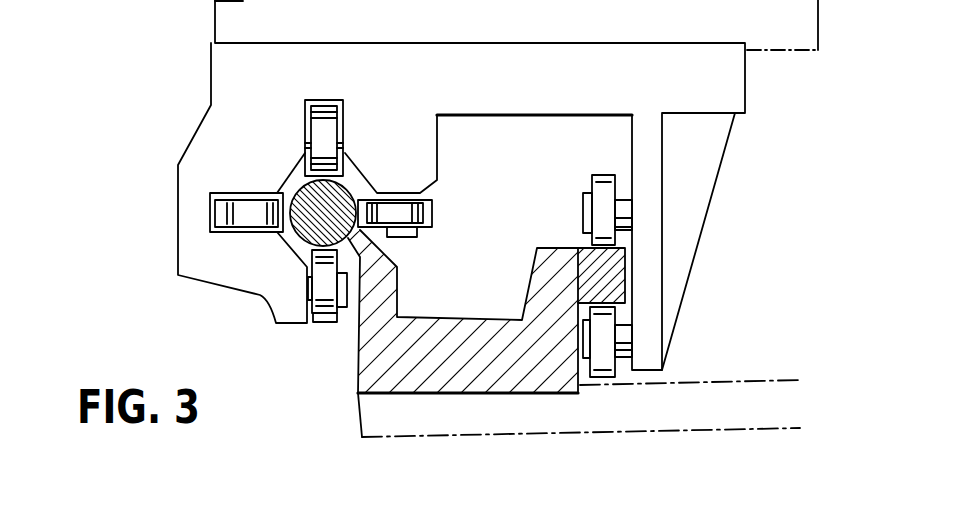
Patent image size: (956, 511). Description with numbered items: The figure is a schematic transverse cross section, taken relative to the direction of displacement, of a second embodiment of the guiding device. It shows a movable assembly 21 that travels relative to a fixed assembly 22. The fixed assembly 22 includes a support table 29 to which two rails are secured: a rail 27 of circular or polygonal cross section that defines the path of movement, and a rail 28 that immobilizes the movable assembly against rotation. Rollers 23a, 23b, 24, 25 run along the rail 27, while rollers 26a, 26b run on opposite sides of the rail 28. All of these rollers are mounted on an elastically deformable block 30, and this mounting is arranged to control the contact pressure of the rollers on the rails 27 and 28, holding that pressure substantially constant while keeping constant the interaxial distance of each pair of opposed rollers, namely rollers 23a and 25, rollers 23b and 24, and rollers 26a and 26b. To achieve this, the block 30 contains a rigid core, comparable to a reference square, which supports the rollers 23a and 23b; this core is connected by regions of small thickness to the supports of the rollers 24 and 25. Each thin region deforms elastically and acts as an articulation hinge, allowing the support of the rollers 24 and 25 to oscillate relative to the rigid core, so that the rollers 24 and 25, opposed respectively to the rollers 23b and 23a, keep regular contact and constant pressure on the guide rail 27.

The movable assembly 21 is at (560, 122).
The fixed assembly 22 is at (455, 308).
The roller 23a is at (228, 215).
The roller 23b is at (327, 100).
The roller 24 is at (319, 323).
The roller 25 is at (413, 210).
The roller 26a is at (601, 182).
The roller 26b is at (608, 342).
The rail 27 is at (340, 197).
The rail for immobilization against rotation 28 is at (613, 278).
The support table 29 is at (530, 366).
The elastically deformable block 30 is at (215, 128).